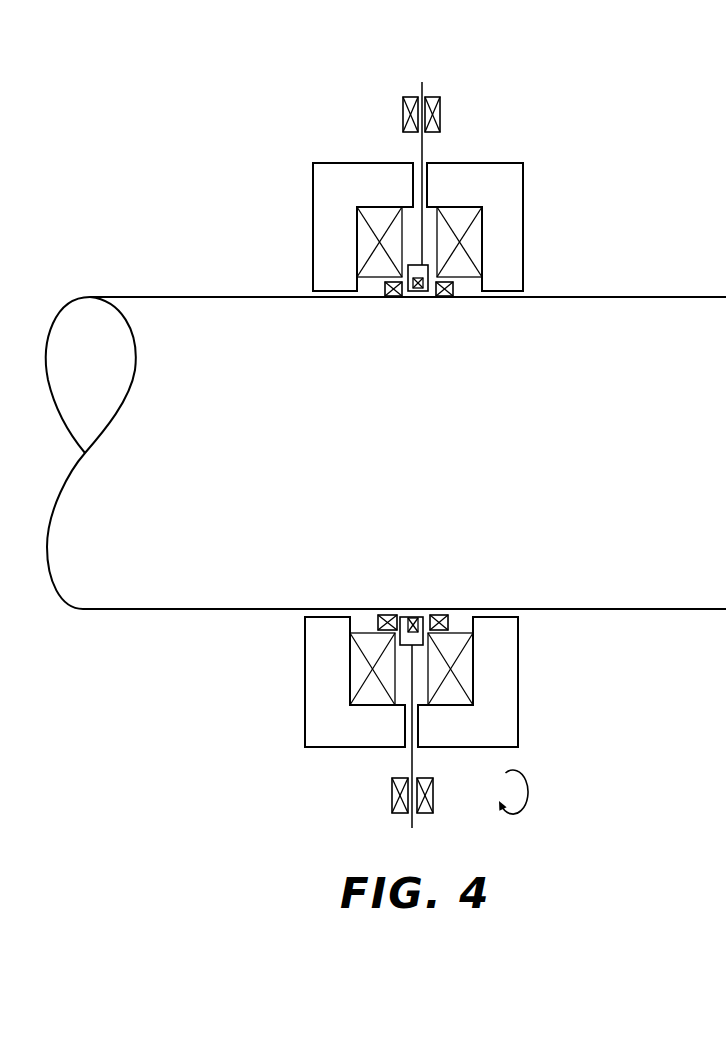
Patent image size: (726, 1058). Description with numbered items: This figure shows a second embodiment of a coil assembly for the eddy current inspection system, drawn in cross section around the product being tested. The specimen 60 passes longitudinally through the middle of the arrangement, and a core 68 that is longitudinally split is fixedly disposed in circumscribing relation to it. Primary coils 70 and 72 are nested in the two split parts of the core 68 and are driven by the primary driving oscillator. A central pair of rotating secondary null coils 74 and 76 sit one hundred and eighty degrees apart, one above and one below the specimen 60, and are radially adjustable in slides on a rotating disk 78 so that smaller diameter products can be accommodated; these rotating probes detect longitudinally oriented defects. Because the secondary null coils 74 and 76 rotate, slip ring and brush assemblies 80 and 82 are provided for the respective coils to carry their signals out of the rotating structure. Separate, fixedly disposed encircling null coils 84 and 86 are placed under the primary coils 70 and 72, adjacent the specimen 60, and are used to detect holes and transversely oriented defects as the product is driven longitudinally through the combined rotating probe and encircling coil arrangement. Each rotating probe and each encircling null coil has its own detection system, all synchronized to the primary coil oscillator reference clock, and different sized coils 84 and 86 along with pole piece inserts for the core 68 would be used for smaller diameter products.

The specimen 60 is at (473, 462).
The core 68 is at (550, 184).
The primary coil 70 is at (373, 215).
The primary coil 72 is at (453, 215).
The rotating secondary null coil 74 is at (422, 273).
The rotating secondary null coil 76 is at (420, 642).
The rotating disk 78 is at (410, 760).
The slip ring and brush assembly 80 is at (403, 97).
The slip ring and brush assembly 82 is at (442, 97).
The encircling null coil 84 is at (385, 290).
The encircling null coil 86 is at (453, 288).